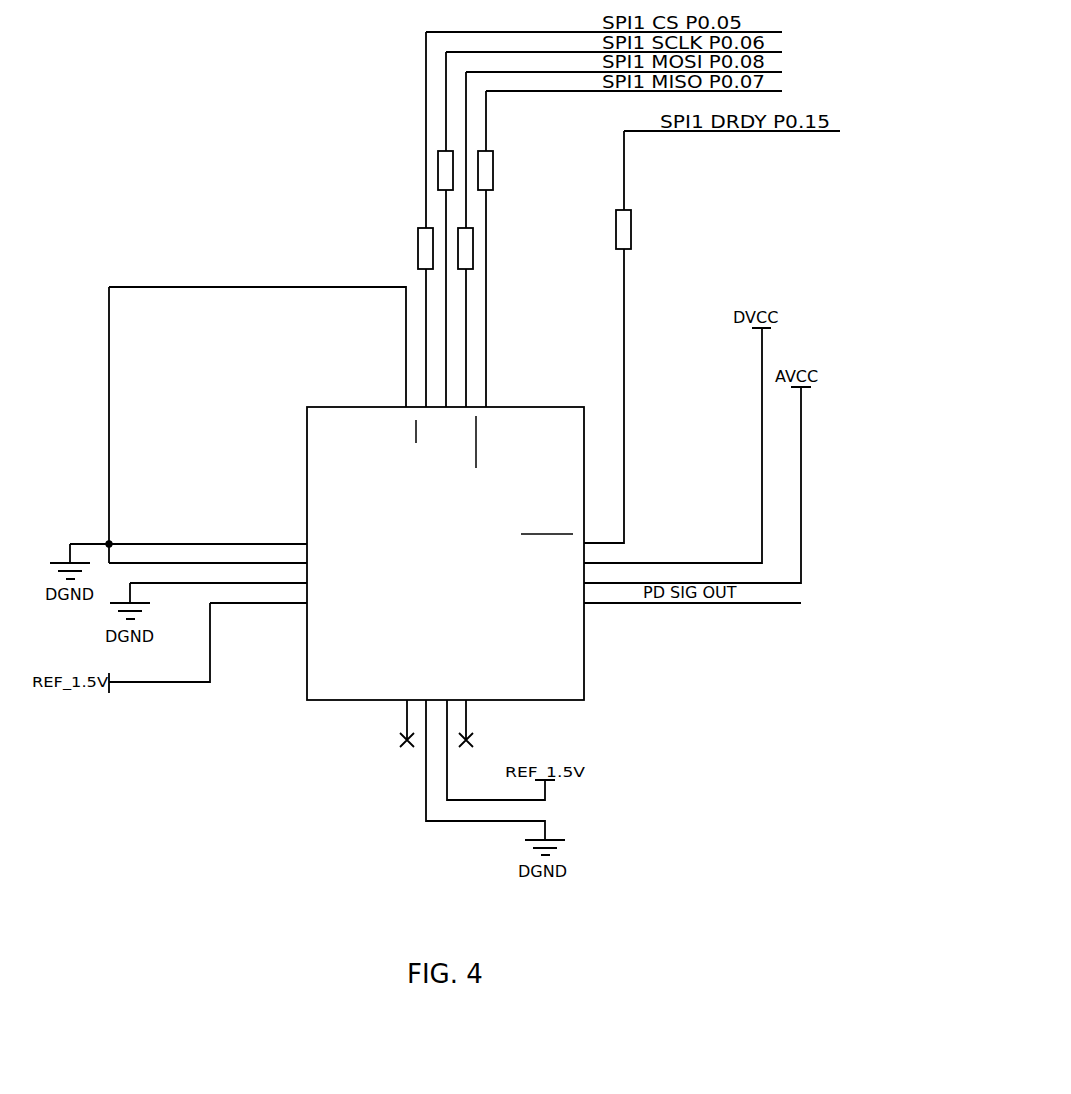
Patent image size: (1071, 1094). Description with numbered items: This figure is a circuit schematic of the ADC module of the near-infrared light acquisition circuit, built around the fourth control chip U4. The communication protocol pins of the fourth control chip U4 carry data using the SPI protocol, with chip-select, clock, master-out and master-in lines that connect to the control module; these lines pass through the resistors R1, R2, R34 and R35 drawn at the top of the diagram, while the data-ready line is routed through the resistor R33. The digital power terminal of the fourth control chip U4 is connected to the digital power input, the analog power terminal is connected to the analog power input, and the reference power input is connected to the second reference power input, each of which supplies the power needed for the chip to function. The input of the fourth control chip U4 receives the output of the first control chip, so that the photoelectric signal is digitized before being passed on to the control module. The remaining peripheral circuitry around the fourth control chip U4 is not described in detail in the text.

The fourth control chip U4 is at (447, 548).
The resistor R1 is at (456, 170).
The resistor R2 is at (496, 170).
The resistor R33 is at (638, 229).
The resistor R34 is at (440, 248).
The resistor R35 is at (480, 248).